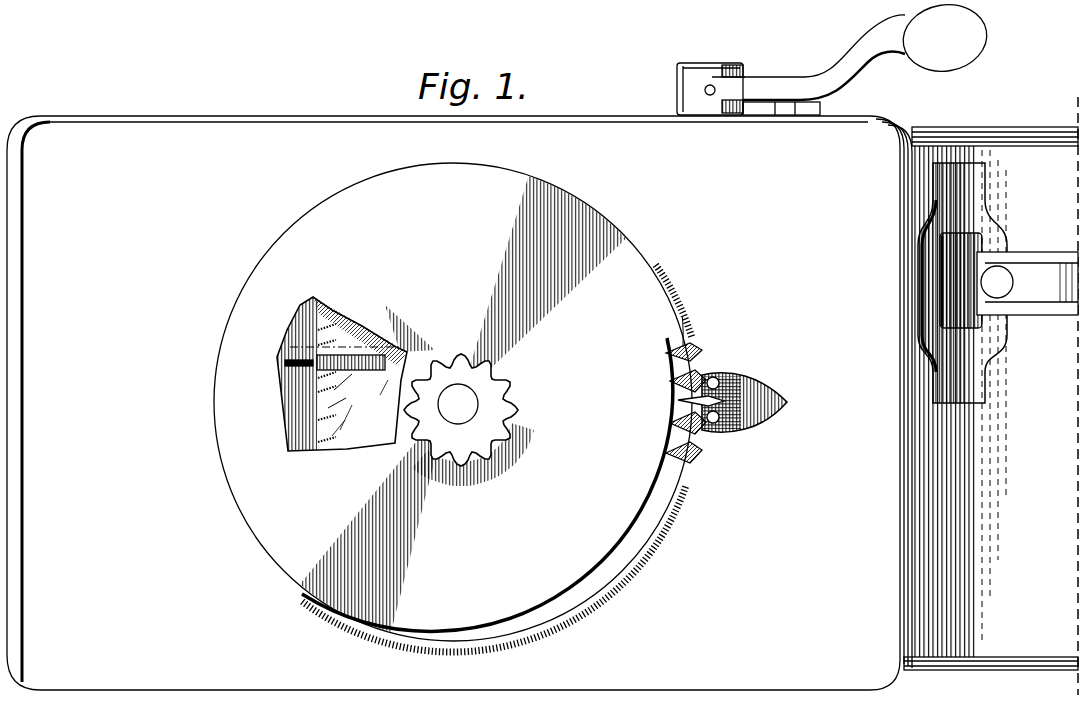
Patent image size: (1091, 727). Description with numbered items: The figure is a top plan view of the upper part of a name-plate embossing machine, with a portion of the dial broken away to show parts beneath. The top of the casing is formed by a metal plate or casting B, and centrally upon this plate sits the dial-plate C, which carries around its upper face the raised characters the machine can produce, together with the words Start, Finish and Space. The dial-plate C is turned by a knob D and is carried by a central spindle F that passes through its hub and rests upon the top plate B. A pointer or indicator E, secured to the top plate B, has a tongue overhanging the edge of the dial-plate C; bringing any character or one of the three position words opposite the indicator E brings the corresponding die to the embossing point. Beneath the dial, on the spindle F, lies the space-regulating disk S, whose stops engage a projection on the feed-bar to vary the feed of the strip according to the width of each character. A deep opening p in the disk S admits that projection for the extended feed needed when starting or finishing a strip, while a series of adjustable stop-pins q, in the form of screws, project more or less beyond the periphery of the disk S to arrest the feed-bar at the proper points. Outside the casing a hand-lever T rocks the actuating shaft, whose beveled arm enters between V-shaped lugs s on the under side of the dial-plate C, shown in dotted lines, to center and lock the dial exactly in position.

The top plate B is at (812, 218).
The hand-lever T is at (784, 72).
The dial-plate C is at (453, 407).
The knob D is at (461, 410).
The central spindle F is at (458, 404).
The space-regulating disk S is at (342, 374).
The opening p is at (285, 362).
The adjustable stop-pins q is at (340, 391).
The pointer or indicator E is at (718, 398).
The lugs s is at (700, 352).